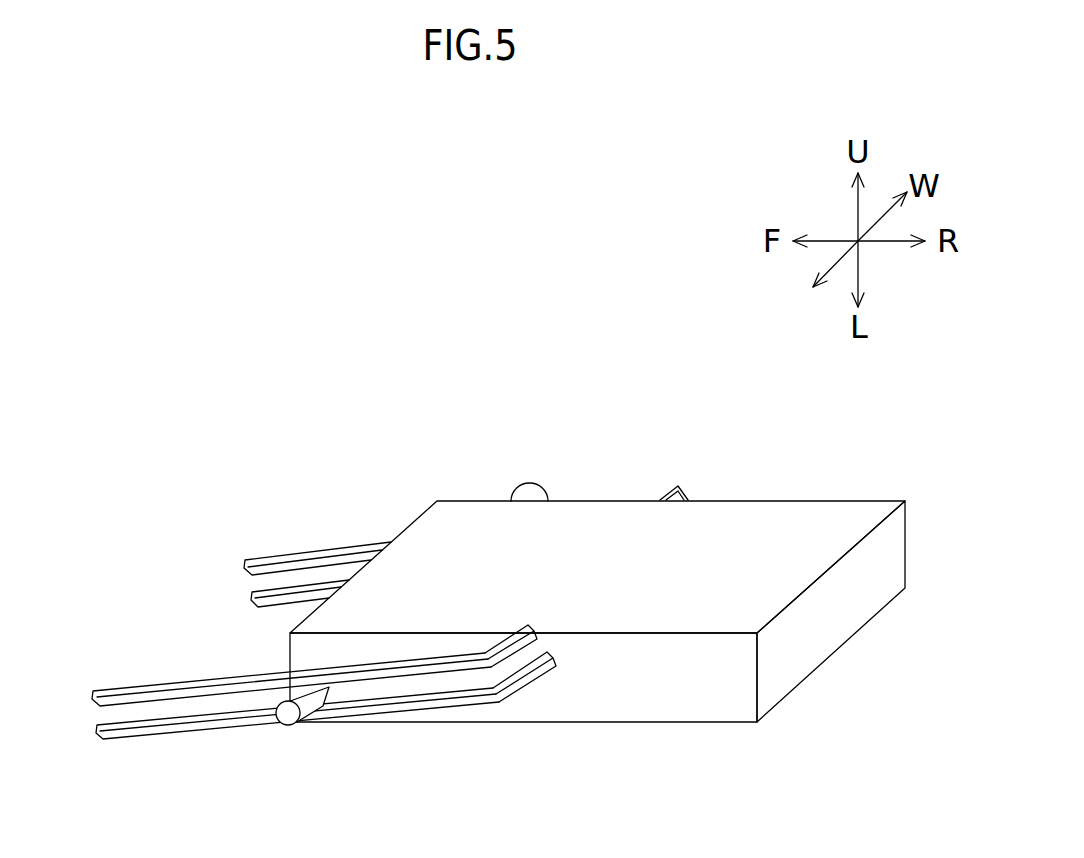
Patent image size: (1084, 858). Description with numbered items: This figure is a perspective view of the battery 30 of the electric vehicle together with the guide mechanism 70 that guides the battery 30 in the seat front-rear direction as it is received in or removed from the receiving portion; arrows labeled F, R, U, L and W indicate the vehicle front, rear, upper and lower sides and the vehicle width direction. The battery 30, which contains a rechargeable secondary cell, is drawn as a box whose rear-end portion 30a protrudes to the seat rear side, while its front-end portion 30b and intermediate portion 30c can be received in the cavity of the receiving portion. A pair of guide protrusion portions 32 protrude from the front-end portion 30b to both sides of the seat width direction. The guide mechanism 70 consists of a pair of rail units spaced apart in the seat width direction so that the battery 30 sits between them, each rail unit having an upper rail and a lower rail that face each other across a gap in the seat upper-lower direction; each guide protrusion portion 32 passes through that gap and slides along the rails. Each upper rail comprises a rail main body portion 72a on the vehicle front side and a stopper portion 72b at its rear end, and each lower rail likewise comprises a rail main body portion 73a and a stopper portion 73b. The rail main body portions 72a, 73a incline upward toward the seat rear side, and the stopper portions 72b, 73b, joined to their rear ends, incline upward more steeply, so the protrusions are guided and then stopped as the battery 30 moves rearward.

The battery 30 is at (611, 553).
The rear-end portion 30a is at (818, 632).
The front-end portion 30b is at (398, 573).
The intermediate portion 30c is at (598, 545).
The guide protrusion portion 32 is at (277, 725).
The guide mechanism 70 is at (285, 475).
The rail main body portion 72a is at (223, 690).
The stopper portion 72b is at (527, 638).
The rail main body portion 73a is at (155, 732).
The stopper portion 73b is at (527, 677).